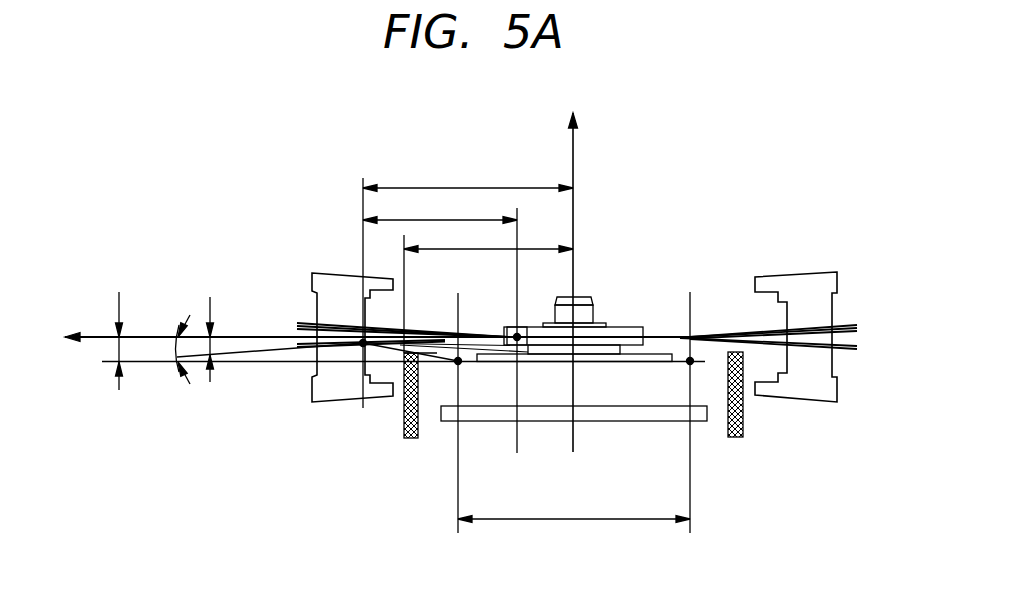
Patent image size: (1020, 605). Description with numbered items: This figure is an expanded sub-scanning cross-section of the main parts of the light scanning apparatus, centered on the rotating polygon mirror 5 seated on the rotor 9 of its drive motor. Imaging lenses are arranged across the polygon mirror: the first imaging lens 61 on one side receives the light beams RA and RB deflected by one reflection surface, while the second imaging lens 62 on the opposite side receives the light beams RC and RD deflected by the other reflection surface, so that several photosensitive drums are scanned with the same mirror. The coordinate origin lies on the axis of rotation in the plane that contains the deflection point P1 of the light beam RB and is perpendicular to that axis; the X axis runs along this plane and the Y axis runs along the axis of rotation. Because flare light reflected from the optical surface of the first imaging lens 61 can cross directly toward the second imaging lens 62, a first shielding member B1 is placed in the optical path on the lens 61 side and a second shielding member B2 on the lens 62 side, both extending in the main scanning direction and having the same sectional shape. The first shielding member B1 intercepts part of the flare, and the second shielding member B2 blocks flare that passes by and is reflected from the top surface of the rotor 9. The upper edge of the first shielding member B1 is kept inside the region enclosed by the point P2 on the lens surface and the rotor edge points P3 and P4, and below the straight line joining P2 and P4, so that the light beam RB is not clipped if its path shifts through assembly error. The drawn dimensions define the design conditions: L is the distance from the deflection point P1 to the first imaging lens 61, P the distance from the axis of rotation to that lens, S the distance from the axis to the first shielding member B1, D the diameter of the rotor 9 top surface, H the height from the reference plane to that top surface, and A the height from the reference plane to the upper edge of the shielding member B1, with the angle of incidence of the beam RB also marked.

The first imaging lens 61 is at (337, 390).
The second imaging lens 62 is at (812, 390).
The rotating polygon mirror 5 is at (537, 330).
The rotor 9 is at (598, 395).
The first shielding member B1 is at (409, 440).
The second shielding member B2 is at (733, 440).
The deflection point P1 is at (517, 337).
The point P2 is at (363, 346).
The edge point of the rotor on the first imaging lens side P3 is at (458, 364).
The edge point of the rotor on the second imaging lens side P4 is at (689, 364).
The light beam RA is at (428, 326).
The light beam RB is at (305, 352).
The light beam RC is at (840, 352).
The light beam RD is at (748, 330).
The distance H is at (111, 341).
The distance A is at (219, 339).
The X axis X is at (373, 338).
The Y axis Y is at (571, 268).
The distance P is at (468, 284).
The distance L is at (440, 323).
The distance S is at (488, 288).
The diameter D is at (574, 412).